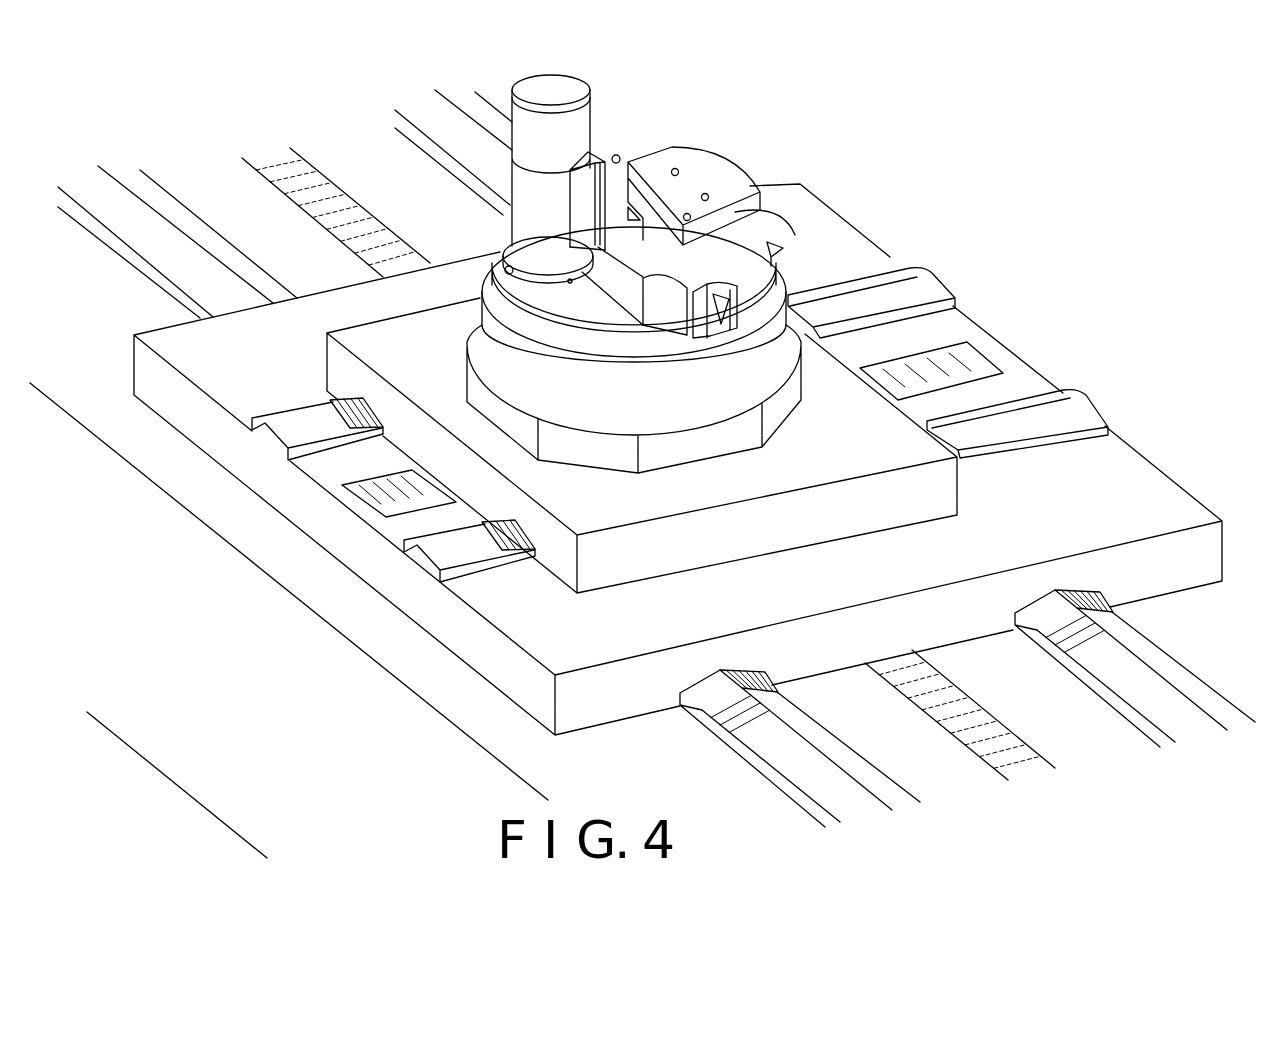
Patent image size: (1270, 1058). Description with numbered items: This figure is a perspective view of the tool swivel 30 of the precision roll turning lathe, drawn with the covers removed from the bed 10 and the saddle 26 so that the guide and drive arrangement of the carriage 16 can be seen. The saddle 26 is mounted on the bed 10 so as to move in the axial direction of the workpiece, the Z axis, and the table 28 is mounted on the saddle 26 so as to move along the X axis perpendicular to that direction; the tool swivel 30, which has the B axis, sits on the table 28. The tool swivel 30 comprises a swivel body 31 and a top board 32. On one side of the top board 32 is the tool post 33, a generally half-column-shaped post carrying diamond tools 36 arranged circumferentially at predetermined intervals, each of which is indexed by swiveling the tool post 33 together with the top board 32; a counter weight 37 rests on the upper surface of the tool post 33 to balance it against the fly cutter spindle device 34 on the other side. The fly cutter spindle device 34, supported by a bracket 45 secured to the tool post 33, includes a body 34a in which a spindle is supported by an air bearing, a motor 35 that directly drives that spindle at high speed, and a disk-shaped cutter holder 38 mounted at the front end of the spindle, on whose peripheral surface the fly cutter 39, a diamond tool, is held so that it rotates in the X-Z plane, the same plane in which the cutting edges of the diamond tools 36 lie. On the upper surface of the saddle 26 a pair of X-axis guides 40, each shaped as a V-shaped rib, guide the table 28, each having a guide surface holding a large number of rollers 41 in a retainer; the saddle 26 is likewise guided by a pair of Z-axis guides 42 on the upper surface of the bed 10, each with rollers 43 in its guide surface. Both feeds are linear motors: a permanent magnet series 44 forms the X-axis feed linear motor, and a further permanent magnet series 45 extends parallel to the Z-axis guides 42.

The bed 10 is at (277, 557).
The carriage 16 is at (678, 456).
The saddle 26 is at (1122, 470).
The table 28 is at (923, 487).
The tool swivel 30 is at (615, 296).
The swivel body 31 is at (762, 370).
The top board 32 is at (492, 263).
The tool post 33 is at (727, 245).
The fly cutter spindle device 34 is at (536, 170).
The body 34a is at (522, 194).
The motor 35 is at (518, 118).
The diamond tools 36 is at (783, 248).
The counter weight 37 is at (715, 173).
The cutter holder 38 is at (570, 283).
The fly cutter 39 is at (510, 275).
The X-axis guides 40 is at (302, 410).
The rollers 41 is at (377, 417).
The Z-axis guides 42 is at (1163, 653).
The rollers 43 is at (1100, 593).
The permanent magnet series 44 is at (414, 483).
The permanent magnet series / bracket 45 is at (620, 156).